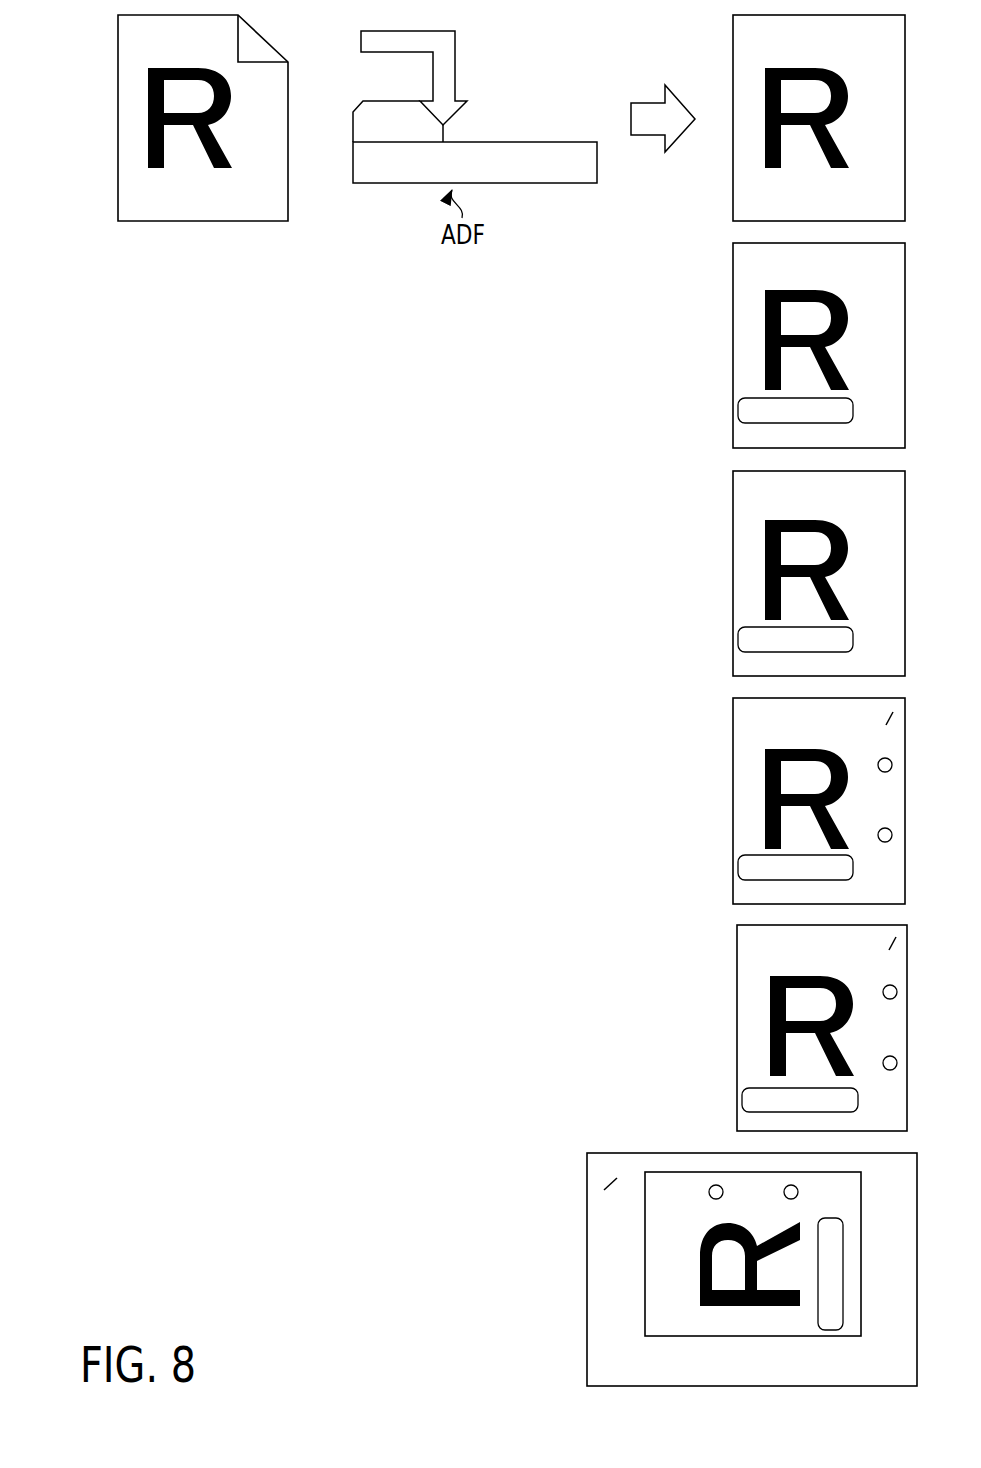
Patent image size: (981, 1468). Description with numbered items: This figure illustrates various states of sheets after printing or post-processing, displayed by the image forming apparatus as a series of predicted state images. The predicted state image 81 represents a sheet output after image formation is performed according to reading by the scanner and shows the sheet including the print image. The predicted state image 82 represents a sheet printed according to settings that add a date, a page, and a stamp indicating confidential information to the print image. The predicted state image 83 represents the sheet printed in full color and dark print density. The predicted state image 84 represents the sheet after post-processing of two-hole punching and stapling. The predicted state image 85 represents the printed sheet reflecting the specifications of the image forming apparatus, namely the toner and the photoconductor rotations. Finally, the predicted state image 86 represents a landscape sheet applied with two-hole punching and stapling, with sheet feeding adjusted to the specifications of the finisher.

The predicted state image 81 is at (101, 98).
The predicted state image 82 is at (684, 325).
The predicted state image 83 is at (684, 559).
The predicted state image 84 is at (684, 789).
The predicted state image 85 is at (684, 1009).
The predicted state image 86 is at (533, 1250).